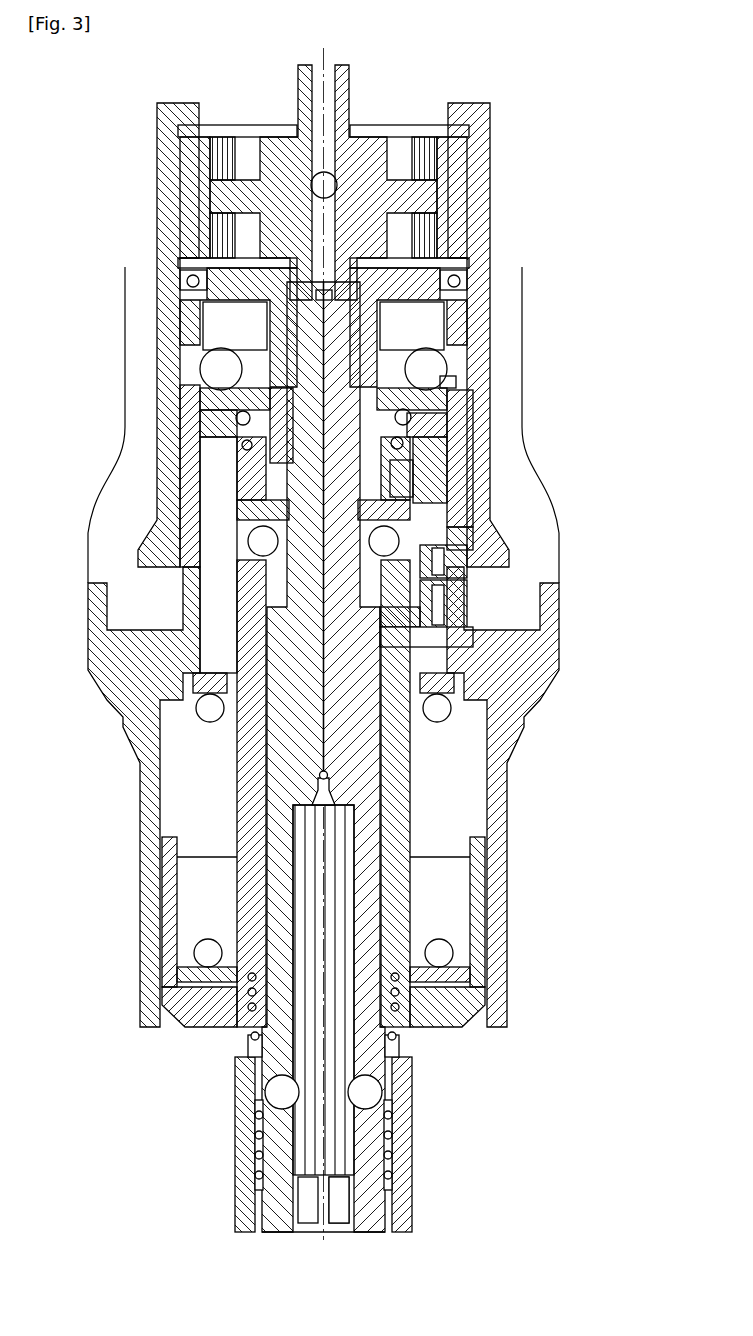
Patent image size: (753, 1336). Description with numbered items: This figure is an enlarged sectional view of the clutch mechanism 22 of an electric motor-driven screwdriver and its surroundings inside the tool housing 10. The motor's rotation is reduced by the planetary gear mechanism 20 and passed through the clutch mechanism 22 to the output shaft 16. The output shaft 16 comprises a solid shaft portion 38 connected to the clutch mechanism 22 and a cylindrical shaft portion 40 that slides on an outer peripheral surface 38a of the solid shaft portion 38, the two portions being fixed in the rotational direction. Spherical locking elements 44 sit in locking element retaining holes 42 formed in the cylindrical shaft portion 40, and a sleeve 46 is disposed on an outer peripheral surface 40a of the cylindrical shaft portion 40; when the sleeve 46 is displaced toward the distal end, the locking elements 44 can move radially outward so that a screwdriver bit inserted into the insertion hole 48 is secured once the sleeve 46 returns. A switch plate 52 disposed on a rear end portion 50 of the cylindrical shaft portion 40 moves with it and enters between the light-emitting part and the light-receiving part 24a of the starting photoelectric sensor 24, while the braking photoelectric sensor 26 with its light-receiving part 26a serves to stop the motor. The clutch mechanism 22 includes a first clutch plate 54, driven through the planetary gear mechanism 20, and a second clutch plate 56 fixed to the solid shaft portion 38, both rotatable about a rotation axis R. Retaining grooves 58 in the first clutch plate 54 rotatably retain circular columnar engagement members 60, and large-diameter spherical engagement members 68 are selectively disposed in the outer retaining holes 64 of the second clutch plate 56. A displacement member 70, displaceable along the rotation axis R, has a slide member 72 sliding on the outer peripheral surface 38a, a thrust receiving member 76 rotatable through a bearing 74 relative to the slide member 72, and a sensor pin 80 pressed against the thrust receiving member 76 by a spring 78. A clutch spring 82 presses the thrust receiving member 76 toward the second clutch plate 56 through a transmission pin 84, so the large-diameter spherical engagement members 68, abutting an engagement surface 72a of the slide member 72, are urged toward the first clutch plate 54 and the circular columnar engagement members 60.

The tool housing 10 is at (140, 330).
The planetary gear mechanism 20 is at (282, 201).
The clutch mechanism 22 is at (431, 357).
The first clutch plate 54 is at (410, 283).
The circular columnar engagement members 60 is at (432, 326).
The large-diameter spherical engagement members 68 is at (428, 356).
The second clutch plate 56 is at (420, 376).
The retaining grooves 58 is at (240, 336).
The outer retaining holes 64 is at (310, 395).
The rotation axis R is at (270, 412).
The engagement surface 72a is at (458, 383).
The displacement member 70 is at (515, 468).
The slide member 72 is at (447, 410).
The bearing 74 is at (465, 435).
The thrust receiving member 76 is at (473, 440).
The spring 78 is at (447, 475).
The sensor pin 80 is at (524, 527).
The braking photoelectric sensor 26 is at (467, 545).
The light-receiving part 26a is at (444, 570).
The starting photoelectric sensor 24 is at (467, 595).
The light-receiving part 24a is at (444, 615).
The switch plate 52 is at (400, 640).
The rear end portion 50 is at (335, 663).
The outer peripheral surface 38a is at (355, 775).
The outer peripheral surface 40a is at (337, 1142).
The transmission pin 84 is at (213, 520).
The output shaft 16 is at (364, 732).
The solid shaft portion 38 is at (385, 660).
The cylindrical shaft portion 40 is at (372, 740).
The clutch spring 82 is at (217, 710).
The sleeve 46 is at (412, 1160).
The locking element retaining holes 42 is at (392, 1070).
The spherical locking elements 44 is at (368, 1095).
The insertion hole 48 is at (392, 1140).